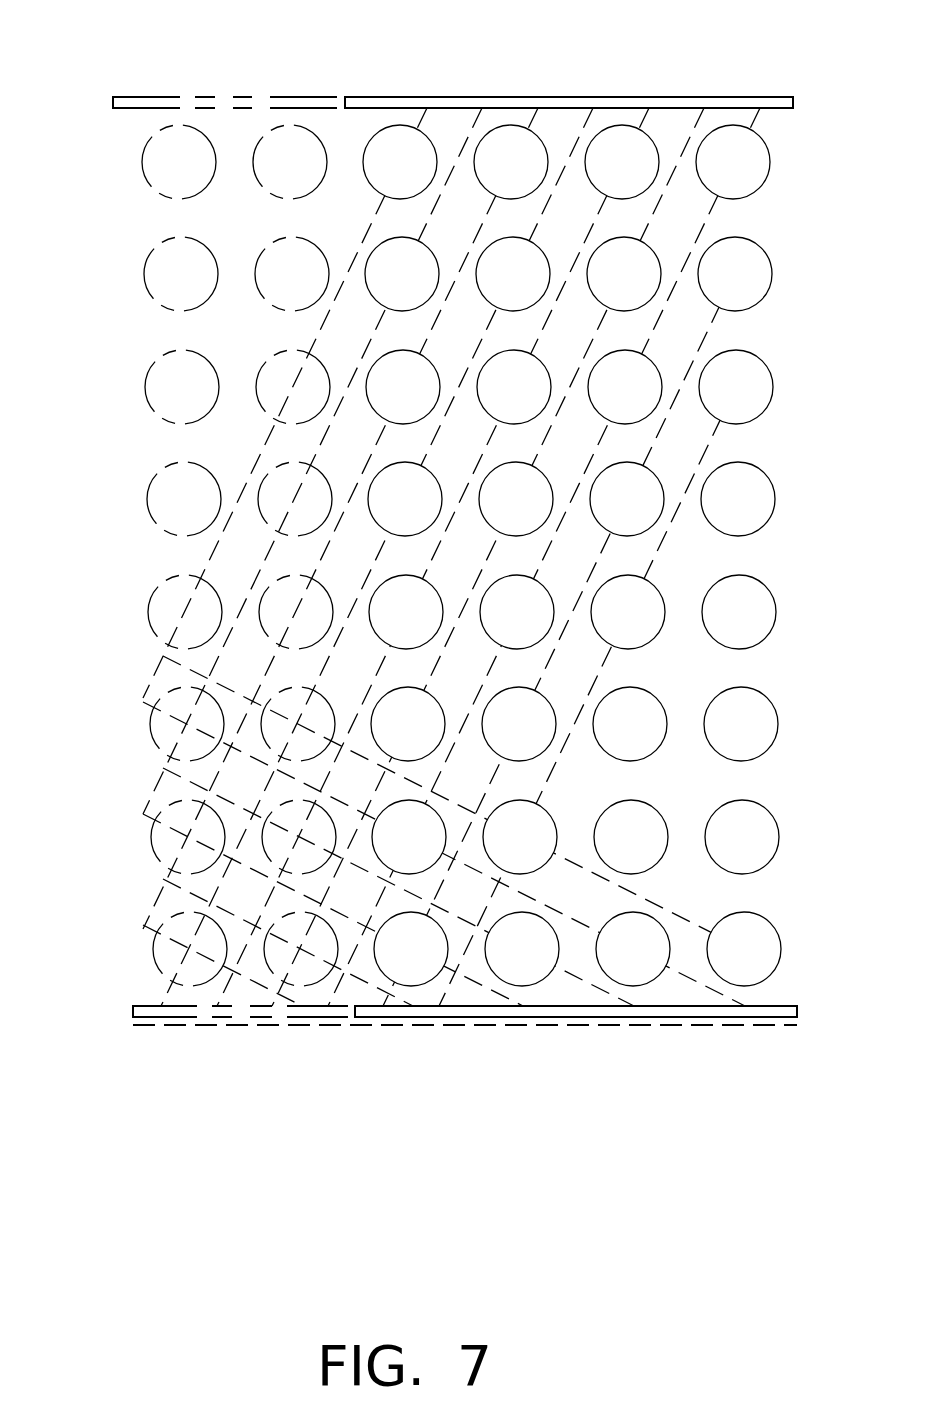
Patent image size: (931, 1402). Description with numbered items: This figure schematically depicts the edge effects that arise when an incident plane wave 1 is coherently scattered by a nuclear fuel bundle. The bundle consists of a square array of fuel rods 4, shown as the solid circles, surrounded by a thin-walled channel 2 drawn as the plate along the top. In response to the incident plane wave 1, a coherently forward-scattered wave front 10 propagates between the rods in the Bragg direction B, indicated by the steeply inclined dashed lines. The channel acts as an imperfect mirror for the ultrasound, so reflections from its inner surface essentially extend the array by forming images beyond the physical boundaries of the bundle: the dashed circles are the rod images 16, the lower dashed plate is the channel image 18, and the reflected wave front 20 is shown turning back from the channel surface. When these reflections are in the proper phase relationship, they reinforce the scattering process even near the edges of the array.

The incident plane wave 1 is at (467, 1025).
The thin-walled channel 2 is at (676, 97).
The fuel rods 4 is at (768, 174).
The coherently forward-scattered wave front 10 is at (680, 915).
The rod images 16 is at (147, 253).
The channel image 18 is at (317, 1030).
The reflected wave front 20 is at (142, 784).
The Bragg direction B is at (562, 750).